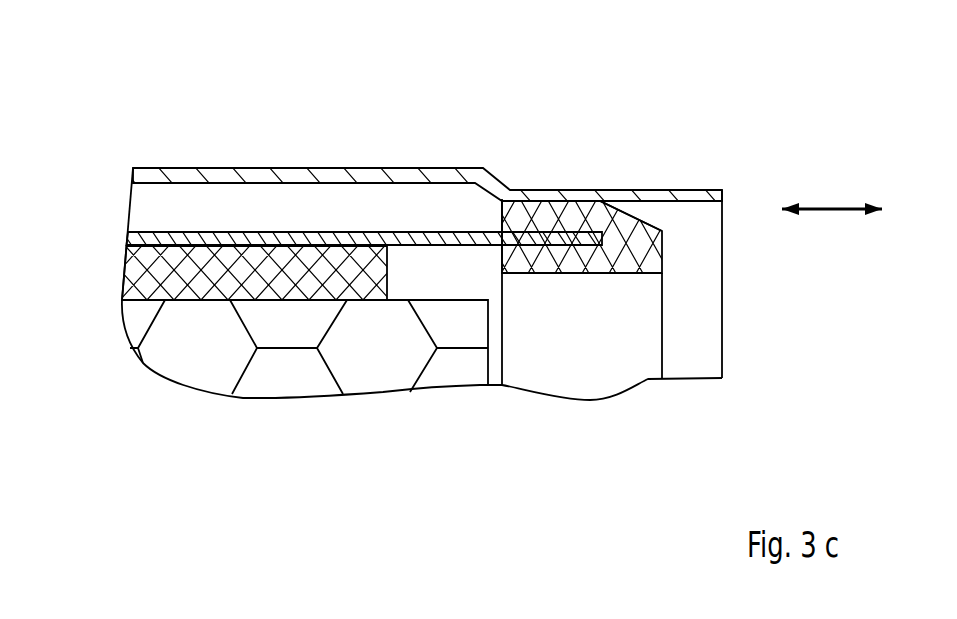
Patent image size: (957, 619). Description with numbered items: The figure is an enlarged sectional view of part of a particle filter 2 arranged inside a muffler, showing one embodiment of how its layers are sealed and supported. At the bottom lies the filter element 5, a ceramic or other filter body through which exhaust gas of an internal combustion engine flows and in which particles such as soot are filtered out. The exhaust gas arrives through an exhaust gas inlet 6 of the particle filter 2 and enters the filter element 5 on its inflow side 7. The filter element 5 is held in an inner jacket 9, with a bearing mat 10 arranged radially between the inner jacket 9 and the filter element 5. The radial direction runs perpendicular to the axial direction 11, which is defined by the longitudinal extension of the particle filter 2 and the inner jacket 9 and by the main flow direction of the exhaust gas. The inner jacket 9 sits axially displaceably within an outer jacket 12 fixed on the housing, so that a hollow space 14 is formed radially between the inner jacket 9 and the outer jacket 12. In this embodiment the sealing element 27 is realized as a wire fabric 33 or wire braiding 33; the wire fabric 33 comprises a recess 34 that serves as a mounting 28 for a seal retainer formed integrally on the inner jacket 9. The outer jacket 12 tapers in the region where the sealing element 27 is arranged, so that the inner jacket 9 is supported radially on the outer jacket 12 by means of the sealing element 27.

The particle filter 2 is at (428, 200).
The filter element 5 is at (422, 299).
The exhaust gas inlet 6 is at (724, 284).
The inflow side 7 is at (669, 485).
The inner jacket 9 is at (368, 191).
The bearing mat 10 is at (246, 270).
The axial direction 11 is at (832, 176).
The outer jacket 12 is at (419, 142).
The hollow space 14 is at (97, 234).
The sealing element 27 is at (657, 175).
The wire fabric 33 is at (631, 216).
The mounting 28 is at (576, 276).
The recess 34 is at (576, 236).